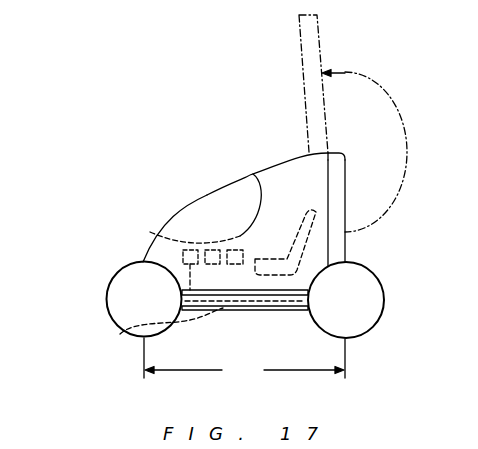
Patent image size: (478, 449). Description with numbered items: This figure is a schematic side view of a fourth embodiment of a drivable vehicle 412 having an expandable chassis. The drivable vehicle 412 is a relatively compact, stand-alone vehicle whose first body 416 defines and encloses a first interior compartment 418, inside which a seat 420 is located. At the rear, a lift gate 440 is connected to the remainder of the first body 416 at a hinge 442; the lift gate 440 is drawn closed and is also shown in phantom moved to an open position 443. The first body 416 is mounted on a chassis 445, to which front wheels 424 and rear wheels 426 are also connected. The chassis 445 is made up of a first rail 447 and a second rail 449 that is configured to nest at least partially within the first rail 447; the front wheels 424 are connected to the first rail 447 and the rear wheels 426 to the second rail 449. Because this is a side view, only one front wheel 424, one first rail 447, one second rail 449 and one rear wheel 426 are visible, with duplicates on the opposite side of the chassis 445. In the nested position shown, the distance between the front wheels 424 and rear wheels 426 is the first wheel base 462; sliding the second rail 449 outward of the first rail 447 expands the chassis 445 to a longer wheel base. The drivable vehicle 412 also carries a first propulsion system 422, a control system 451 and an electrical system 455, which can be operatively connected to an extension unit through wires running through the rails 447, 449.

The drivable vehicle 412 is at (188, 133).
The first body 416 is at (187, 208).
The first interior compartment 418 is at (295, 180).
The seat 420 is at (312, 238).
The first propulsion system 422 is at (156, 233).
The front wheels 424 is at (110, 322).
The rear wheels 426 is at (381, 322).
The lift gate 440 is at (345, 210).
The hinge 442 is at (328, 152).
The open position 443 is at (321, 58).
The chassis 445 is at (250, 321).
The first rail 447 is at (263, 312).
The second rail 449 is at (118, 336).
The control system 451 is at (237, 249).
The electrical system 455 is at (211, 250).
The first wheel base 462 is at (244, 359).